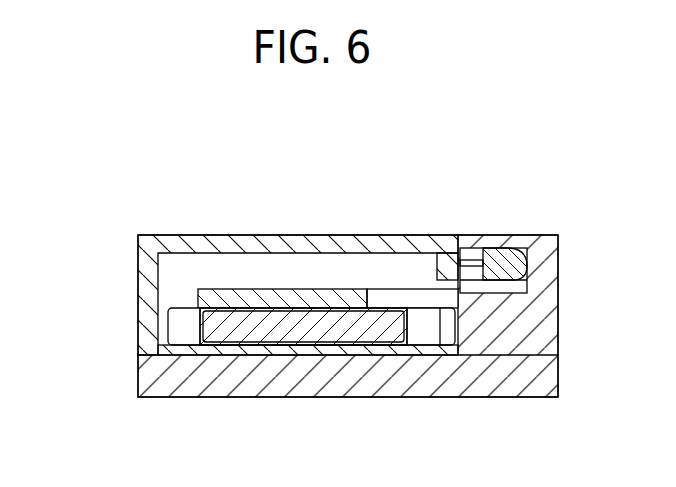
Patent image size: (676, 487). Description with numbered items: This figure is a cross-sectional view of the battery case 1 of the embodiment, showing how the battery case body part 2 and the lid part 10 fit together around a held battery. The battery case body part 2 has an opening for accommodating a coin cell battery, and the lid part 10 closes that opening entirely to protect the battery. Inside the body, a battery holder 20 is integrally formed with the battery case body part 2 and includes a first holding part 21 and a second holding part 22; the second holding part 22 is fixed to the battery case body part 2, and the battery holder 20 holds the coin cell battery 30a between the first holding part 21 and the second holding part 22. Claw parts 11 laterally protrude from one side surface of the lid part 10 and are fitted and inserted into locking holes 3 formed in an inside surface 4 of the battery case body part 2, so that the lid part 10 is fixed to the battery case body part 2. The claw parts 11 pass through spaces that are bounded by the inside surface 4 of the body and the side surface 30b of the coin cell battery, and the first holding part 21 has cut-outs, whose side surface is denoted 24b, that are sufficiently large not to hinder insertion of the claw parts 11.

The battery case 1 is at (123, 216).
The battery case body part 2 is at (535, 340).
The locking hole 3 is at (525, 288).
The inside surface 4 is at (447, 250).
The lid part 10 is at (270, 237).
The claw part 11 is at (490, 262).
The battery holder 20 is at (238, 305).
The first holding part 21 is at (202, 298).
The second holding part 22 is at (264, 331).
The side surface of cut-out part 24b is at (385, 300).
The coin cell battery 30a is at (307, 335).
The side surface of coin cell battery 30b is at (188, 335).